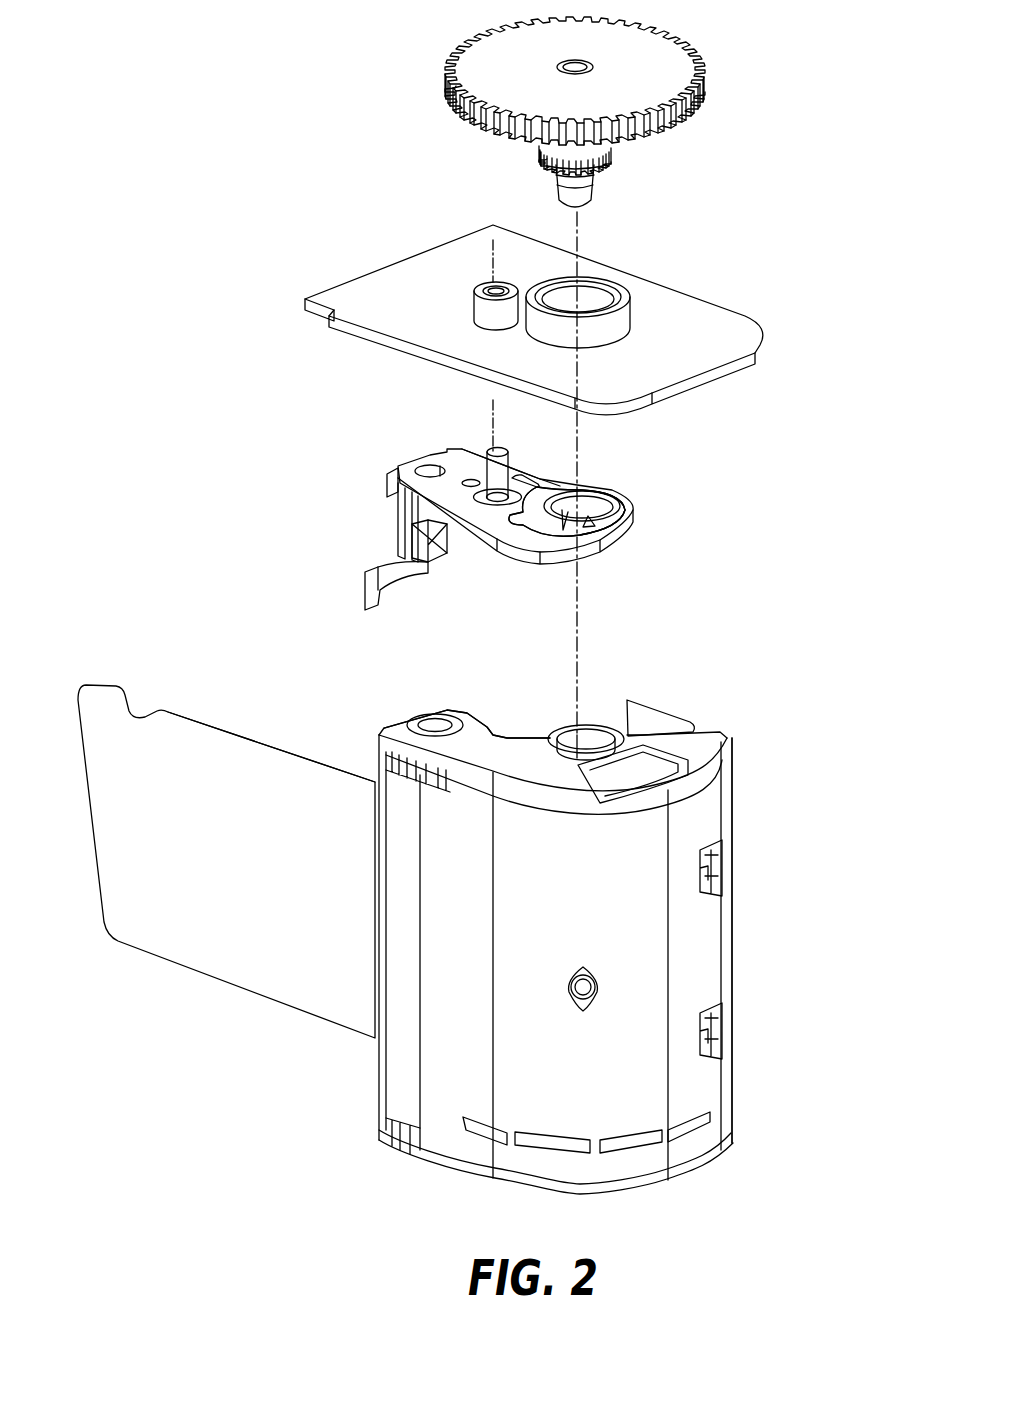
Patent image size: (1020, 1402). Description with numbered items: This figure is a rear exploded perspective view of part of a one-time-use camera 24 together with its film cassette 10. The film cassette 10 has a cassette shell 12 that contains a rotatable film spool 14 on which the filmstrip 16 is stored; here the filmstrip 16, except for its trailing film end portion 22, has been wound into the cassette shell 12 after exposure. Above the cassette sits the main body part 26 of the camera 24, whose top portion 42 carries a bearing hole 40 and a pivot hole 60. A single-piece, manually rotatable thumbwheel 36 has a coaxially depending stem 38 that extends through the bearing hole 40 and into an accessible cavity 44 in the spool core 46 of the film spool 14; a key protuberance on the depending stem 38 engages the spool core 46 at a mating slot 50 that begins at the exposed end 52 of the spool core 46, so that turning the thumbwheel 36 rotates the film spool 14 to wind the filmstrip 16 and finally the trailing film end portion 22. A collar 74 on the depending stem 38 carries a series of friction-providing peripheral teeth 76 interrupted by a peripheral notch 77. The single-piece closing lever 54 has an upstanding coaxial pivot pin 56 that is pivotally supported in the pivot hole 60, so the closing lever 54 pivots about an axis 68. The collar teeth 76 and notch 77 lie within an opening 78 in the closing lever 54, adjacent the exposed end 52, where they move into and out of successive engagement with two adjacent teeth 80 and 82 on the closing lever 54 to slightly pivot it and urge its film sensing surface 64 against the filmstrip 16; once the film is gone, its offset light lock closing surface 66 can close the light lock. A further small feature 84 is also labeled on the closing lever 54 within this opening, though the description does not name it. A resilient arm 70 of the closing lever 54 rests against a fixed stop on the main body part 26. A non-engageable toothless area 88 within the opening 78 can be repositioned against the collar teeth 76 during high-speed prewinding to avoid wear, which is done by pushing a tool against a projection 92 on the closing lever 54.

The film cassette 10 is at (762, 917).
The cassette shell 12 is at (708, 973).
The film spool 14 is at (577, 740).
The filmstrip 16 is at (238, 730).
The trailing film end portion 22 is at (248, 926).
The one-time-use camera 24 is at (225, 224).
The main body part 26 is at (306, 297).
The thumbwheel 36 is at (664, 25).
The depending stem 38 is at (590, 176).
The bearing hole 40 is at (604, 295).
The top portion 42 is at (703, 350).
The accessible cavity 44 is at (602, 748).
The spool core 46 is at (563, 738).
The mating slot 50 is at (592, 740).
The exposed end 52 is at (540, 725).
The closing lever 54 is at (400, 458).
The pivot pin 56 is at (487, 455).
The pivot hole 60 is at (490, 284).
The film sensing surface 64 is at (365, 590).
The light lock closing surface 66 is at (440, 565).
The axis 68 is at (492, 262).
The resilient arm 70 is at (530, 470).
The collar 74 is at (545, 140).
The peripheral teeth 76 is at (552, 166).
The peripheral notch 77 is at (608, 150).
The opening 78 is at (565, 548).
The tooth 80 is at (612, 518).
The tooth 82 is at (622, 507).
The tab 84 is at (590, 540).
The toothless area 88 is at (605, 492).
The projection 92 is at (387, 488).